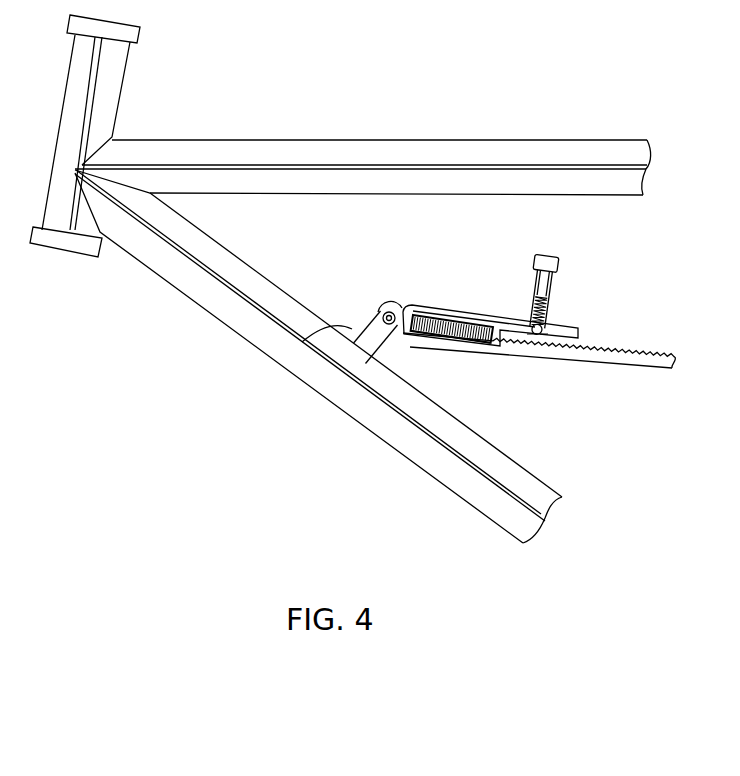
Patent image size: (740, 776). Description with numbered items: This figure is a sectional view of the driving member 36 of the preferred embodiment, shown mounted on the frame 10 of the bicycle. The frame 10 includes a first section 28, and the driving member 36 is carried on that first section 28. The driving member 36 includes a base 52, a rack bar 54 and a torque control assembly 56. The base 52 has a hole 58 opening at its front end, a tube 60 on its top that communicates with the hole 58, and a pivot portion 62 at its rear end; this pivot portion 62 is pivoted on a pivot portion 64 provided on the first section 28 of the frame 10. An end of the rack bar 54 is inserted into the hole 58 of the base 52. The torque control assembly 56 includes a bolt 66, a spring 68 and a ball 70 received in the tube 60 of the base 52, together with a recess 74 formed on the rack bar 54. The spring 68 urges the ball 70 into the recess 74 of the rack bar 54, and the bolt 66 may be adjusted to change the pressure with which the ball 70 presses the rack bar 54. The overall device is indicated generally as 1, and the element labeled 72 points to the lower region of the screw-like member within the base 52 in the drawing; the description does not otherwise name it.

The bicycle rack / carrier device 1 is at (557, 104).
The frame 10 is at (405, 140).
The first section 28 is at (233, 316).
The driving member 36 is at (604, 326).
The base 52 is at (425, 304).
The rack bar 54 is at (634, 353).
The torque control assembly 56 is at (553, 283).
The hole 58 is at (455, 314).
The tube 60 is at (550, 306).
The pivot portion 62 is at (345, 373).
The pivot portion 64 is at (352, 326).
The bolt 66 is at (537, 262).
The spring 68 is at (533, 310).
The ball 70 is at (533, 338).
The screw lower portion 72 is at (457, 345).
The recess 74 is at (545, 340).